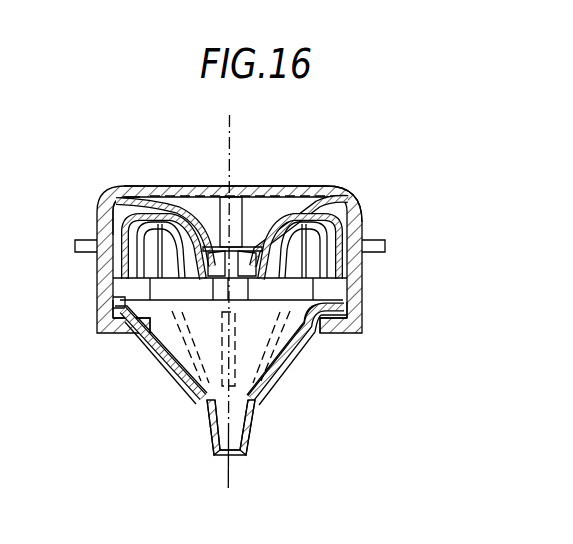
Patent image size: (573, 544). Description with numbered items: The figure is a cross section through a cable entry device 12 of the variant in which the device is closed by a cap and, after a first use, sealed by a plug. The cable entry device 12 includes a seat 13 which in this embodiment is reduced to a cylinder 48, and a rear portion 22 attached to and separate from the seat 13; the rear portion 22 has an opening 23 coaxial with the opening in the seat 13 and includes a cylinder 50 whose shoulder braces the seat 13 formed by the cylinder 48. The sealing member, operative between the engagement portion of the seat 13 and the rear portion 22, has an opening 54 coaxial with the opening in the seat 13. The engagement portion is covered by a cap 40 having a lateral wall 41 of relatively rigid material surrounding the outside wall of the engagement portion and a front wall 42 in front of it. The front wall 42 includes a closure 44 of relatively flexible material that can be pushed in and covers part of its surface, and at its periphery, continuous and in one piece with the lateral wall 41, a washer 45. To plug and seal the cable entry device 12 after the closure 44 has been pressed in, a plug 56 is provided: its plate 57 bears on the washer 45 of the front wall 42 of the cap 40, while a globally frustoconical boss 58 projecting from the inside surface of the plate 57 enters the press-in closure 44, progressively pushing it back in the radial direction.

The cable entry device 12 is at (350, 178).
The seat 13 is at (121, 327).
The rear portion 22 is at (289, 363).
The opening 23 is at (201, 398).
The cap 40 is at (98, 211).
The lateral wall 41 is at (185, 190).
The front wall 42 is at (322, 193).
The closure 44 is at (362, 218).
The washer 45 is at (100, 210).
The cylinder 48 is at (352, 287).
The cylinder 50 is at (340, 334).
The opening 54 is at (240, 460).
The plug 56 is at (267, 172).
The plate 57 is at (116, 200).
The boss 58 is at (337, 258).